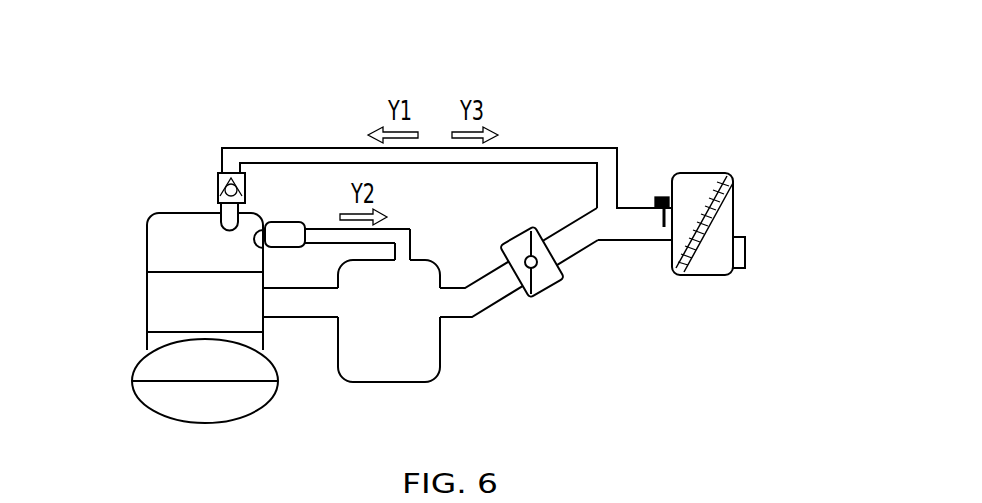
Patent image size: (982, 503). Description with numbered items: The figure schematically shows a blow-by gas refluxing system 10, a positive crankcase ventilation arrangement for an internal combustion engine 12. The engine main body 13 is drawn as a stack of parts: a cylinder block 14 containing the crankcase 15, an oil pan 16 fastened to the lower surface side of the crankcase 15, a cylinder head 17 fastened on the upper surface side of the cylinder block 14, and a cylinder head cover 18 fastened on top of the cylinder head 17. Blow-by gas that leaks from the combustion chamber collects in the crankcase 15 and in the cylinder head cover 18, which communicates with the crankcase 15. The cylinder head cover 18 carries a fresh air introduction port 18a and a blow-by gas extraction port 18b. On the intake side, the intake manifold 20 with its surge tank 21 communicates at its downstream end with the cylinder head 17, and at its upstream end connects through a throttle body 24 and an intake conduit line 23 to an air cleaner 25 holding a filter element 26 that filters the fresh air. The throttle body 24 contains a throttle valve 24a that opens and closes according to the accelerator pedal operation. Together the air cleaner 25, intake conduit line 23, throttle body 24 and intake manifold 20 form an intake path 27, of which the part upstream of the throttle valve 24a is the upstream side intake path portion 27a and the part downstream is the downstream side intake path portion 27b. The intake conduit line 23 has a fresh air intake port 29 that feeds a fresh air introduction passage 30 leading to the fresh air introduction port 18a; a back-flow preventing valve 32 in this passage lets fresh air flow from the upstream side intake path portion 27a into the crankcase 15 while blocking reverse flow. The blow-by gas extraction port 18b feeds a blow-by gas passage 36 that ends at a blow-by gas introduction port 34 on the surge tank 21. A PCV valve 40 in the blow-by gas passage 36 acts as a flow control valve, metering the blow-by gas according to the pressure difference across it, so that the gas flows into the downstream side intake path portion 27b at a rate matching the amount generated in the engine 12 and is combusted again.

The blow-by gas refluxing system 10 is at (583, 117).
The internal combustion engine 12 is at (143, 161).
The engine main body 13 is at (133, 300).
The cylinder block 14 is at (135, 344).
The crankcase 15 is at (135, 368).
The oil pan 16 is at (138, 400).
The cylinder head 17 is at (145, 276).
The cylinder head cover 18 is at (145, 240).
The fresh air introduction port 18a is at (217, 222).
The blow-by gas extraction port 18b is at (268, 250).
The intake manifold 20 is at (455, 276).
The surge tank 21 is at (361, 383).
The intake conduit line 23 is at (630, 207).
The throttle body 24 is at (497, 242).
The throttle valve 24a is at (536, 296).
The air cleaner 25 is at (690, 172).
The filter element 26 is at (720, 207).
The intake path 27 is at (485, 296).
The upstream side intake path portion 27a is at (627, 227).
The downstream side intake path portion 27b is at (456, 310).
The fresh air intake port 29 is at (602, 202).
The fresh air introduction passage 30 is at (530, 158).
The back-flow preventing valve 32 is at (204, 165).
The blow-by gas introduction port 34 is at (402, 253).
The blow-by gas passage 36 is at (388, 235).
The PCV valve 40 is at (286, 210).